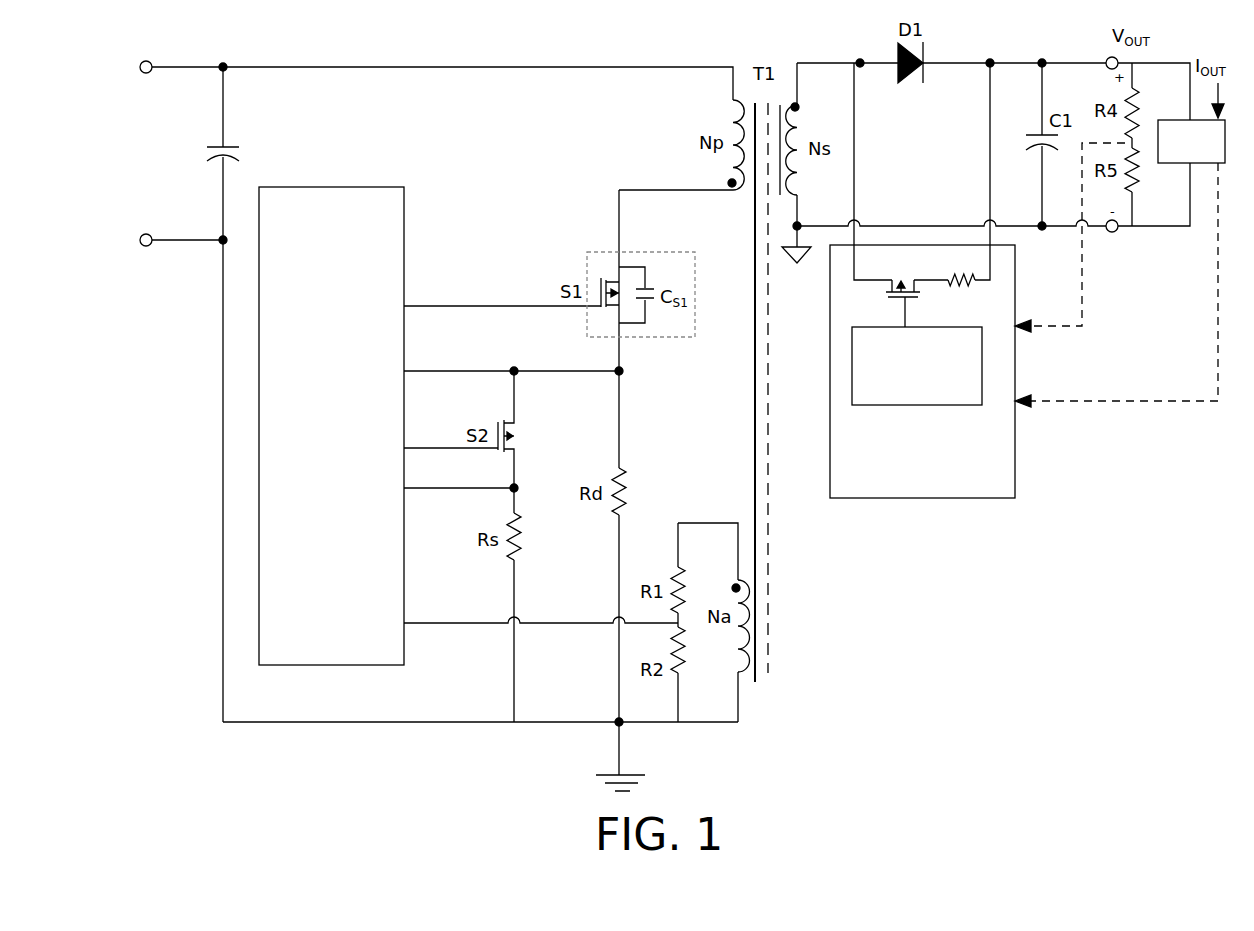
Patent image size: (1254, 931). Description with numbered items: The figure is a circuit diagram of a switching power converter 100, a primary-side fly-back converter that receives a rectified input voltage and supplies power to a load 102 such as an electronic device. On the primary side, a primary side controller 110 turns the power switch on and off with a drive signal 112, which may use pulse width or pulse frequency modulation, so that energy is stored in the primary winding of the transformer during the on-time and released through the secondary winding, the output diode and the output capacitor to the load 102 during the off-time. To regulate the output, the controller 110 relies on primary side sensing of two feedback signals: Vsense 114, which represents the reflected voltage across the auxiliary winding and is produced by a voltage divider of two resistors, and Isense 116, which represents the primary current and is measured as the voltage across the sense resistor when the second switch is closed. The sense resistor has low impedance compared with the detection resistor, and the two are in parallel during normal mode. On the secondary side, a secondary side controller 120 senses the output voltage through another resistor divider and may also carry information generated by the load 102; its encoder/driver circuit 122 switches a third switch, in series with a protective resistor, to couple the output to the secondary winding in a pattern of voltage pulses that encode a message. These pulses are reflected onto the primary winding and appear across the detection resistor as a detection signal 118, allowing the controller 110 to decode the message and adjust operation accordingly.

The switching power converter 100 is at (208, 753).
The load 102 is at (1191, 141).
The primary side controller 110 is at (331, 426).
The drive signal 112 is at (511, 306).
The Vsense feedback signal 114 is at (446, 623).
The Isense feedback signal 116 is at (446, 490).
The detection signal 118 is at (471, 371).
The secondary side controller 120 is at (922, 371).
The encoder/driver circuit 122 is at (917, 366).